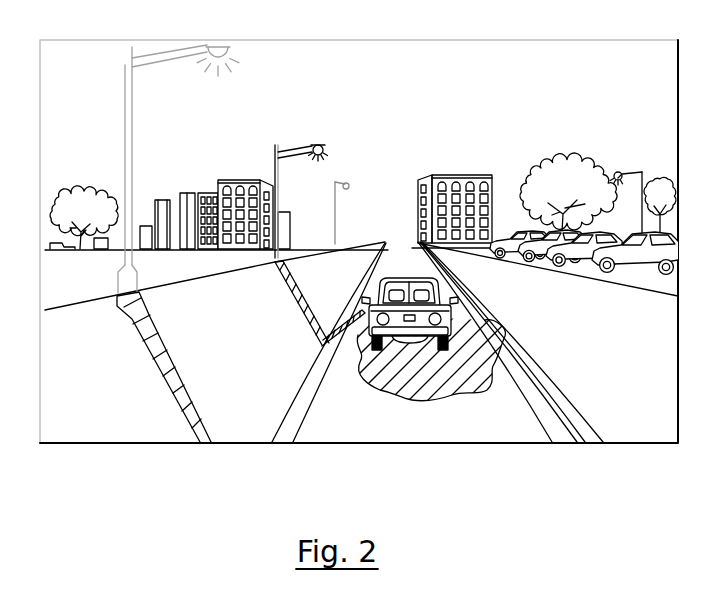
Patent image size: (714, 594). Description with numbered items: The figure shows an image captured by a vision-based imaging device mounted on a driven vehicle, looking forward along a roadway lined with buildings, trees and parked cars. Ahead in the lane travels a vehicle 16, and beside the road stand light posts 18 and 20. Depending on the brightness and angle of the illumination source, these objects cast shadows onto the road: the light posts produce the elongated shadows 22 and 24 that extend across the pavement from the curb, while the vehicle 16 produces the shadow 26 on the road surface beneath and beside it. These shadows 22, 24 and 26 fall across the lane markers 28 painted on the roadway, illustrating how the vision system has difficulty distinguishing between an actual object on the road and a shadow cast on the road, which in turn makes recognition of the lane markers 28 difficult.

The vehicle 16 is at (457, 307).
The light post 18 is at (125, 128).
The light post 20 is at (275, 145).
The shadow 22 is at (186, 392).
The shadow 24 is at (310, 326).
The shadow 26 is at (493, 355).
The lane markers 28 is at (518, 395).